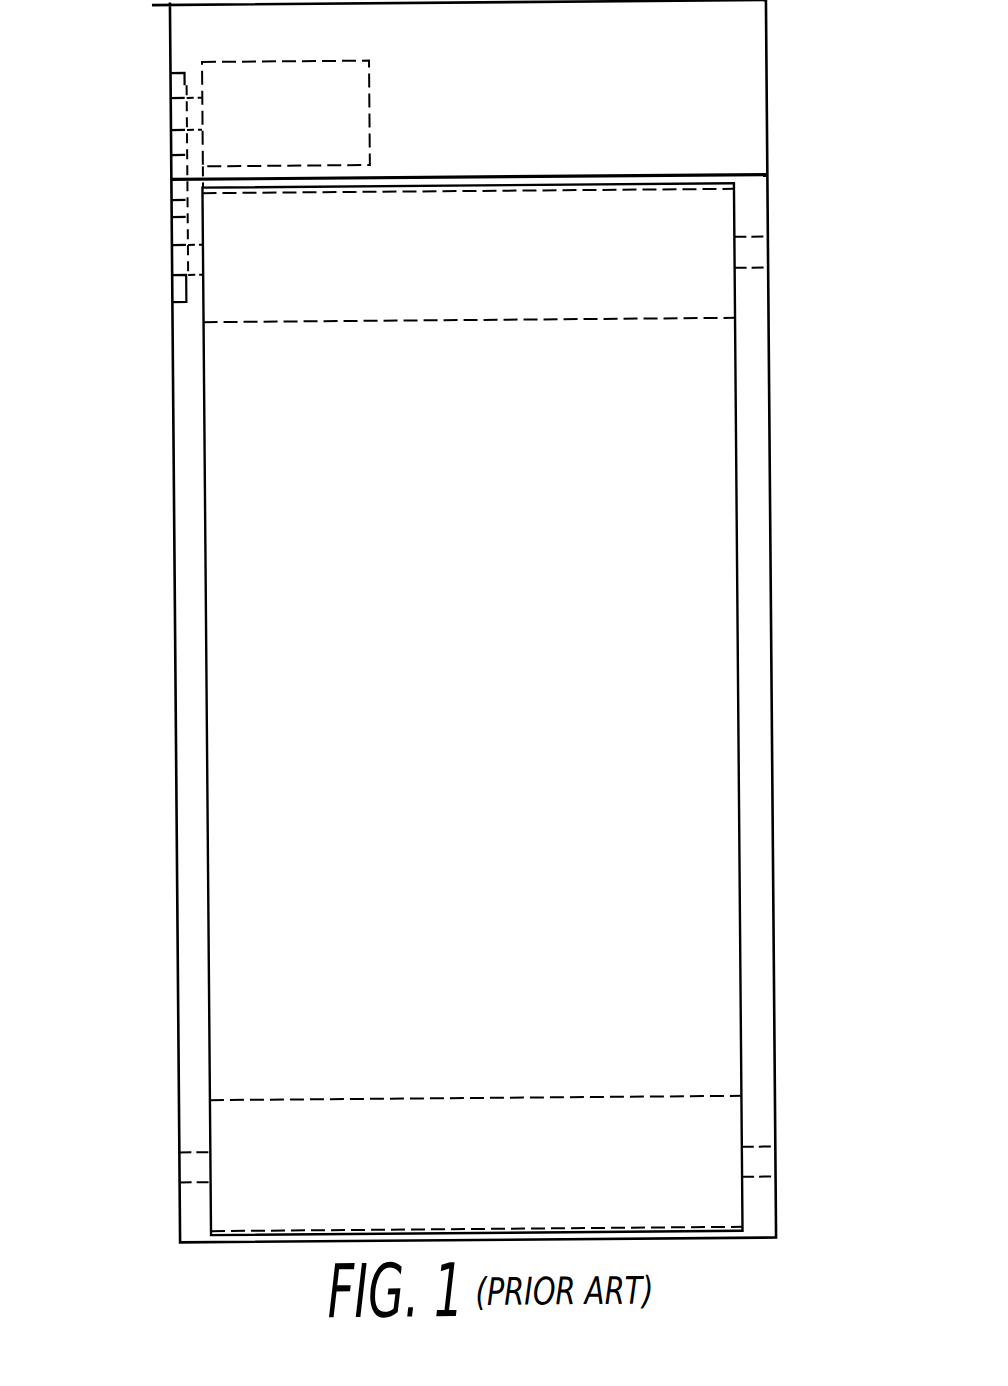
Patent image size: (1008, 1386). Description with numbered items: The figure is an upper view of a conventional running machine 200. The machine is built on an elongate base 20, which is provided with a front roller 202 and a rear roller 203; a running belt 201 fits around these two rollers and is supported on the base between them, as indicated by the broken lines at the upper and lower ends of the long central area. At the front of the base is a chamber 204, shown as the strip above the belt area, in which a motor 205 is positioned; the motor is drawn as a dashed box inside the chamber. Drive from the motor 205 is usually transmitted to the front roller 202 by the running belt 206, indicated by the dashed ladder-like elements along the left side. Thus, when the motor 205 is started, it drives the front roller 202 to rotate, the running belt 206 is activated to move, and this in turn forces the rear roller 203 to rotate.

The elongate base 20 is at (773, 834).
The conventional running machine 200 is at (786, 708).
The running belt 201 is at (692, 574).
The front roller 202 is at (675, 227).
The rear roller 203 is at (693, 1132).
The chamber 204 is at (724, 102).
The motor 205 is at (249, 88).
The running belt 206 is at (174, 198).